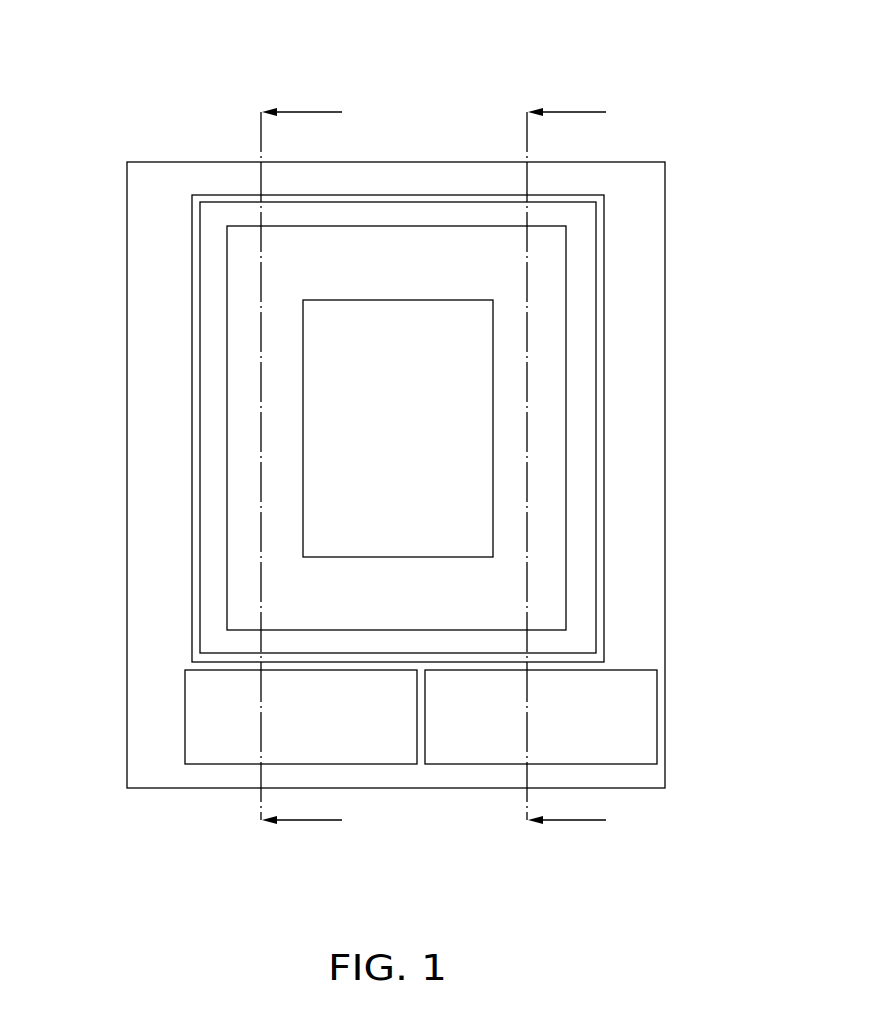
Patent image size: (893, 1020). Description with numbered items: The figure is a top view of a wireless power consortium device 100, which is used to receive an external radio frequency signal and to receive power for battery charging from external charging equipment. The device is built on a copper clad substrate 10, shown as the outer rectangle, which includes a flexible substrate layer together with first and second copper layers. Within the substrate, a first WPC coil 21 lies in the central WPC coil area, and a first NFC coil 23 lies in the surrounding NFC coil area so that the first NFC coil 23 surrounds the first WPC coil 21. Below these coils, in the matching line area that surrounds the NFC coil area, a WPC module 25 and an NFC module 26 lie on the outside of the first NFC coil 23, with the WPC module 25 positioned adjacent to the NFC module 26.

The wireless power consortium device 100 is at (357, 58).
The copper clad substrate 10 is at (152, 352).
The first WPC coil 21 is at (196, 474).
The first NFC coil 23 is at (547, 507).
The WPC module 25 is at (223, 752).
The NFC module 26 is at (486, 745).